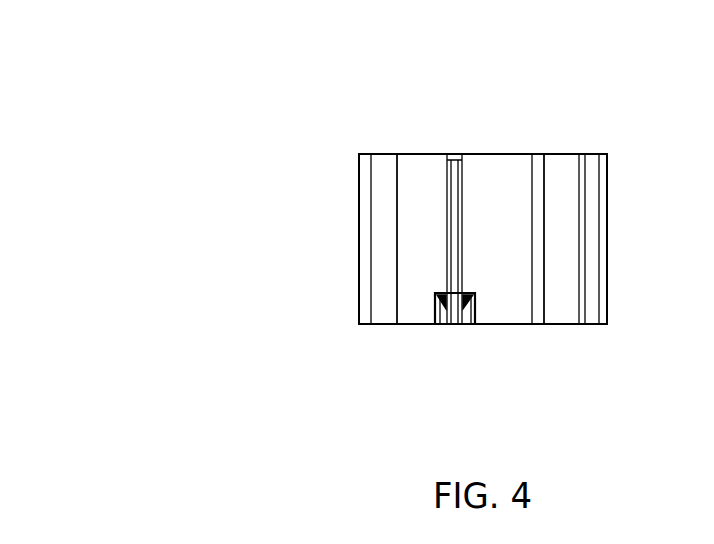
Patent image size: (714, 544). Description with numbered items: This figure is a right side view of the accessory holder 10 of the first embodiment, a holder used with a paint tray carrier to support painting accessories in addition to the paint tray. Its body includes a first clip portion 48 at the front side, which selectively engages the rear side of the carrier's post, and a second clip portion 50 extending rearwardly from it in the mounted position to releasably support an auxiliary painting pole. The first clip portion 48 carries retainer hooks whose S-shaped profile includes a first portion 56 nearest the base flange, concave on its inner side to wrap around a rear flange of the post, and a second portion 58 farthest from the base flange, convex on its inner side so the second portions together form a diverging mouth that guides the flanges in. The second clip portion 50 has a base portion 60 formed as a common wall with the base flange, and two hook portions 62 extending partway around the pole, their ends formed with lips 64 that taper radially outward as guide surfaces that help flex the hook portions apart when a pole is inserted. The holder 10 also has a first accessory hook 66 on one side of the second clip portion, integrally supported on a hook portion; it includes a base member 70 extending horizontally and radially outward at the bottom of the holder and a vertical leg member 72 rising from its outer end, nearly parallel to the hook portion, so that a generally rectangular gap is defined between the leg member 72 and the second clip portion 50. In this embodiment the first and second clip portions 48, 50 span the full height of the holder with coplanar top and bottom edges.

The accessory holder 10 is at (138, 205).
The first clip portion 48 is at (617, 100).
The second clip portion 50 is at (530, 98).
The first portion of the hook 56 is at (562, 313).
The second portion of the hook 58 is at (597, 312).
The base portion 60 is at (533, 298).
The hook portion 62 is at (416, 312).
The lip 64 is at (364, 292).
The first accessory hook 66 is at (436, 232).
The base member 70 is at (438, 325).
The vertical leg member 72 is at (447, 195).